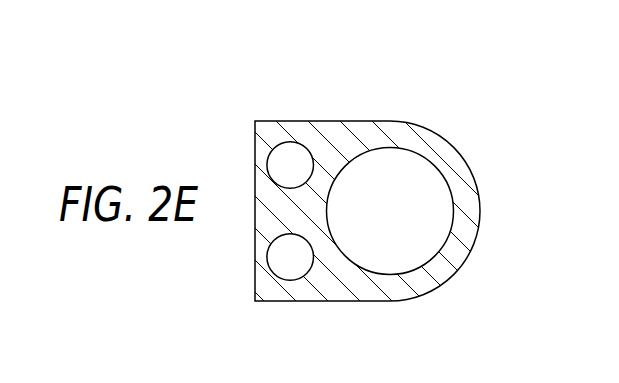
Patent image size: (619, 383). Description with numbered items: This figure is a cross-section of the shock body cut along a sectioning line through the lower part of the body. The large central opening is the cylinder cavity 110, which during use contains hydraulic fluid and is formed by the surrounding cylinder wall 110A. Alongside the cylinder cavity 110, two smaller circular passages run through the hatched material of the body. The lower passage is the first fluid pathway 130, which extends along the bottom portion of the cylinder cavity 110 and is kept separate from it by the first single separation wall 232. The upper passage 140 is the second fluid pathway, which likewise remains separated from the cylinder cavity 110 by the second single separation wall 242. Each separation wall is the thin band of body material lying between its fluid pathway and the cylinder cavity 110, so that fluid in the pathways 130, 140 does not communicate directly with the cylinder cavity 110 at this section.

The cylinder cavity 110 is at (401, 191).
The cylinder wall 110A is at (480, 209).
The upper passage 140 is at (291, 165).
The first fluid pathway 130 is at (291, 258).
The second single separation wall 242 is at (328, 166).
The first single separation wall 232 is at (330, 255).